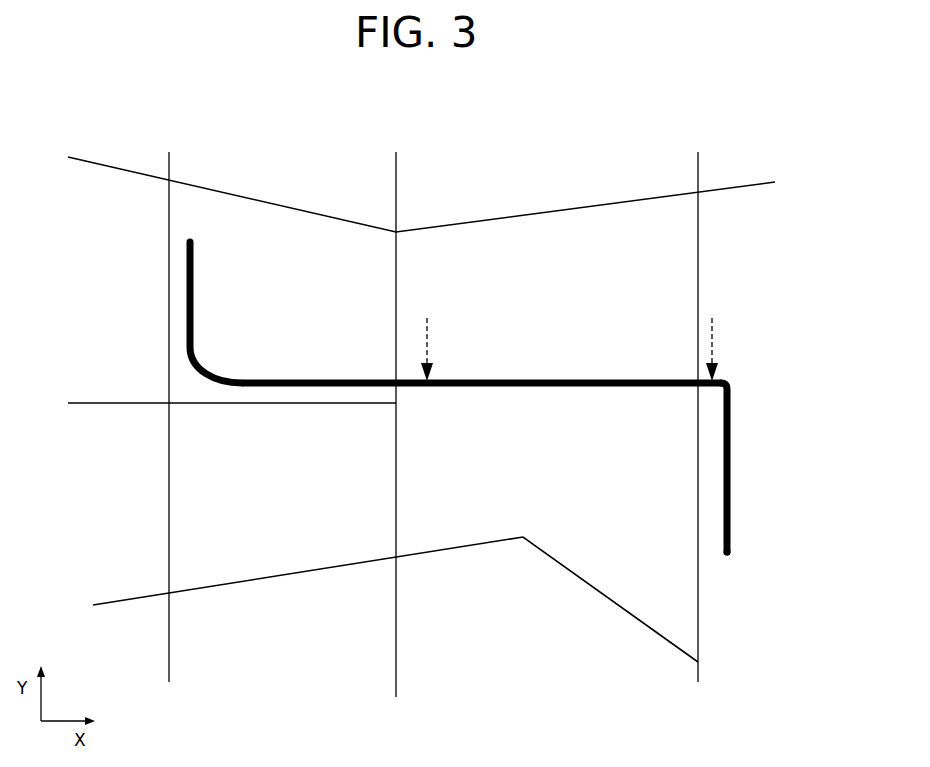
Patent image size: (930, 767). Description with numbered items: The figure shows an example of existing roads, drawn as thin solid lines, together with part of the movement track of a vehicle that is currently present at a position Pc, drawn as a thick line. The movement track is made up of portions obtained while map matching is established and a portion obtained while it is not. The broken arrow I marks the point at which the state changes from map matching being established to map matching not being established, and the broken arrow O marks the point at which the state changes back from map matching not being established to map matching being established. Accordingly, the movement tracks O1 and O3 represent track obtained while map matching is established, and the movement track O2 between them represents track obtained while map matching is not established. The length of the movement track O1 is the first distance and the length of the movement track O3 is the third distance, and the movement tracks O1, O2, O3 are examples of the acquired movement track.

The movement track O1 is at (227, 312).
The movement track O2 is at (482, 358).
The movement track O3 is at (769, 467).
The position Pc is at (769, 537).
The broken arrow I is at (432, 349).
The broken arrow O is at (721, 349).